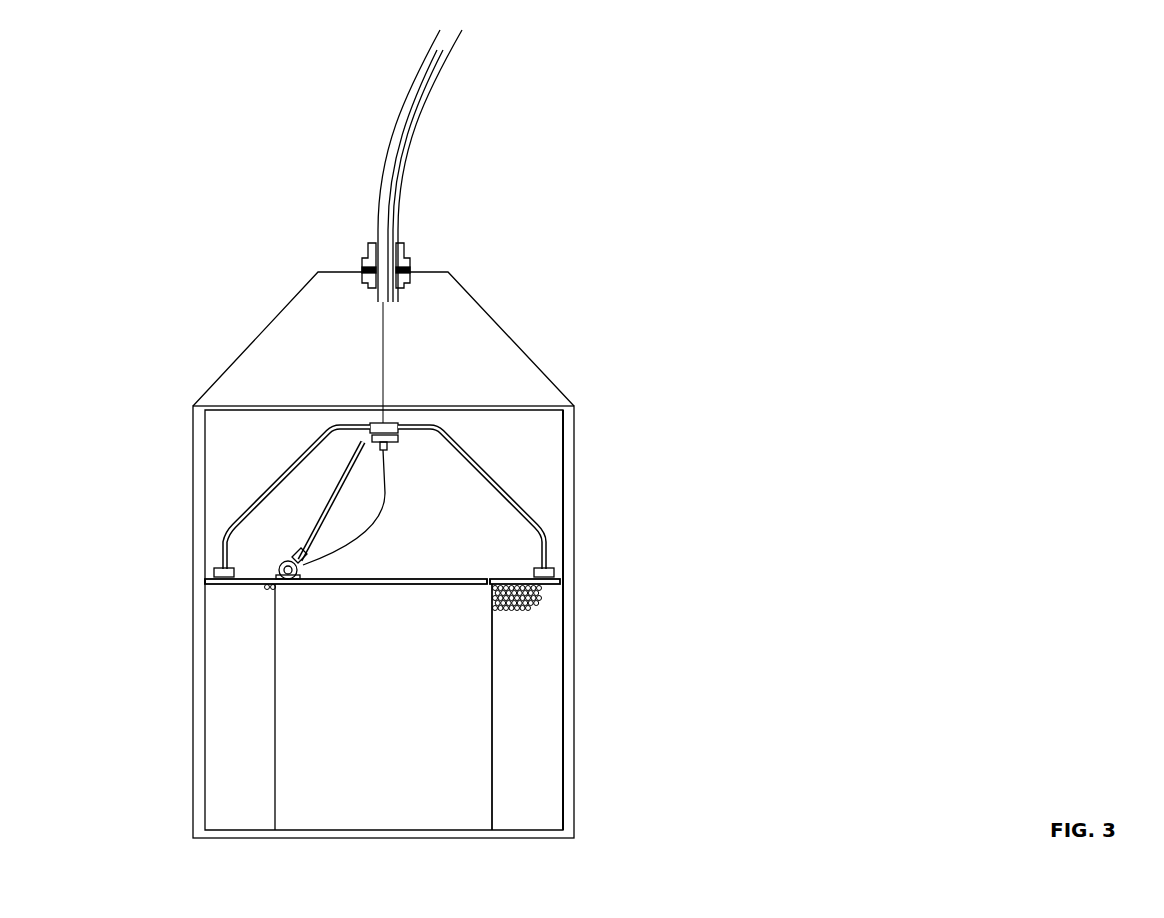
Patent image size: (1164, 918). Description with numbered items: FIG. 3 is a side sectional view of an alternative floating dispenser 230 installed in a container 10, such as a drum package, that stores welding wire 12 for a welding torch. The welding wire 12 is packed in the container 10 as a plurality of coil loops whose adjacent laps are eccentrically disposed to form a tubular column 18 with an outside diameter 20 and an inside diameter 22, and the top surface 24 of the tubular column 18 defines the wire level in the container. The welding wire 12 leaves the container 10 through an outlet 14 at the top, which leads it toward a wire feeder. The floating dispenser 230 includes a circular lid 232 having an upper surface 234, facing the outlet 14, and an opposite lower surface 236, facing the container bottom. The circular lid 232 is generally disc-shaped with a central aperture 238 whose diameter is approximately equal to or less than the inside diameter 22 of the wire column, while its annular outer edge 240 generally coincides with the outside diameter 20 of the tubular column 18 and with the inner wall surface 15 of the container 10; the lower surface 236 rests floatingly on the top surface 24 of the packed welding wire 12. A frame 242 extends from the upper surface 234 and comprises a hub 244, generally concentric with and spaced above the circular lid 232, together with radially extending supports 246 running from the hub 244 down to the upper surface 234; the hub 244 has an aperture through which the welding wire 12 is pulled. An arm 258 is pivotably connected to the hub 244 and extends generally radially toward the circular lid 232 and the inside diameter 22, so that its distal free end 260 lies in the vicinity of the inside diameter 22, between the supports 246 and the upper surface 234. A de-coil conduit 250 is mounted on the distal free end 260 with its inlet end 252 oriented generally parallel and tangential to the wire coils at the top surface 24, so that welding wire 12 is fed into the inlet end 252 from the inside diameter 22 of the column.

The container 10 is at (358, 434).
The welding wire 12 is at (367, 437).
The outlet 14 is at (376, 245).
The inner wall surface 15 is at (562, 477).
The tubular column 18 is at (531, 775).
The outside diameter 20 is at (562, 638).
The inside diameter 22 is at (492, 723).
The top surface 24 is at (346, 576).
The floating dispenser 230 is at (429, 392).
The circular lid 232 is at (257, 569).
The upper surface 234 is at (492, 592).
The lower surface 236 is at (492, 591).
The central aperture 238 is at (487, 580).
The annular outer edge 240 is at (205, 579).
The frame 242 is at (226, 523).
The hub 244 is at (372, 418).
The radially extending supports 246 is at (299, 502).
The de-coil conduit 250 is at (255, 527).
The inlet end 252 is at (313, 585).
The arm 258 is at (337, 487).
The distal free end 260 is at (294, 556).